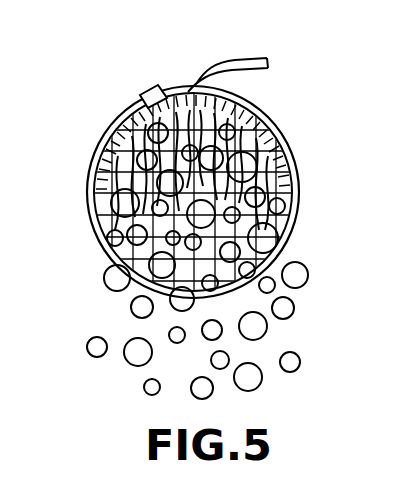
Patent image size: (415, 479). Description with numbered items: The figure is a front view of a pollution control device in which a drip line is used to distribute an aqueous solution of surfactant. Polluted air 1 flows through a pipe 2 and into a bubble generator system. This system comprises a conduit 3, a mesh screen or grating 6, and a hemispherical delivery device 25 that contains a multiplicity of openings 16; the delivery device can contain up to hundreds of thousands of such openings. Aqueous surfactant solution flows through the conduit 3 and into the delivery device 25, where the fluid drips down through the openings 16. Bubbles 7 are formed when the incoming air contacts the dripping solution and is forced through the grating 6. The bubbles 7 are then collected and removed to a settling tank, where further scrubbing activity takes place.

The polluted air 1 is at (191, 168).
The pipe 2 is at (172, 74).
The conduit 3 is at (288, 63).
The hemispherical delivery device 25 is at (276, 128).
The openings 16 is at (86, 192).
The mesh screen or grating 6 is at (306, 210).
The bubbles 7 is at (100, 273).